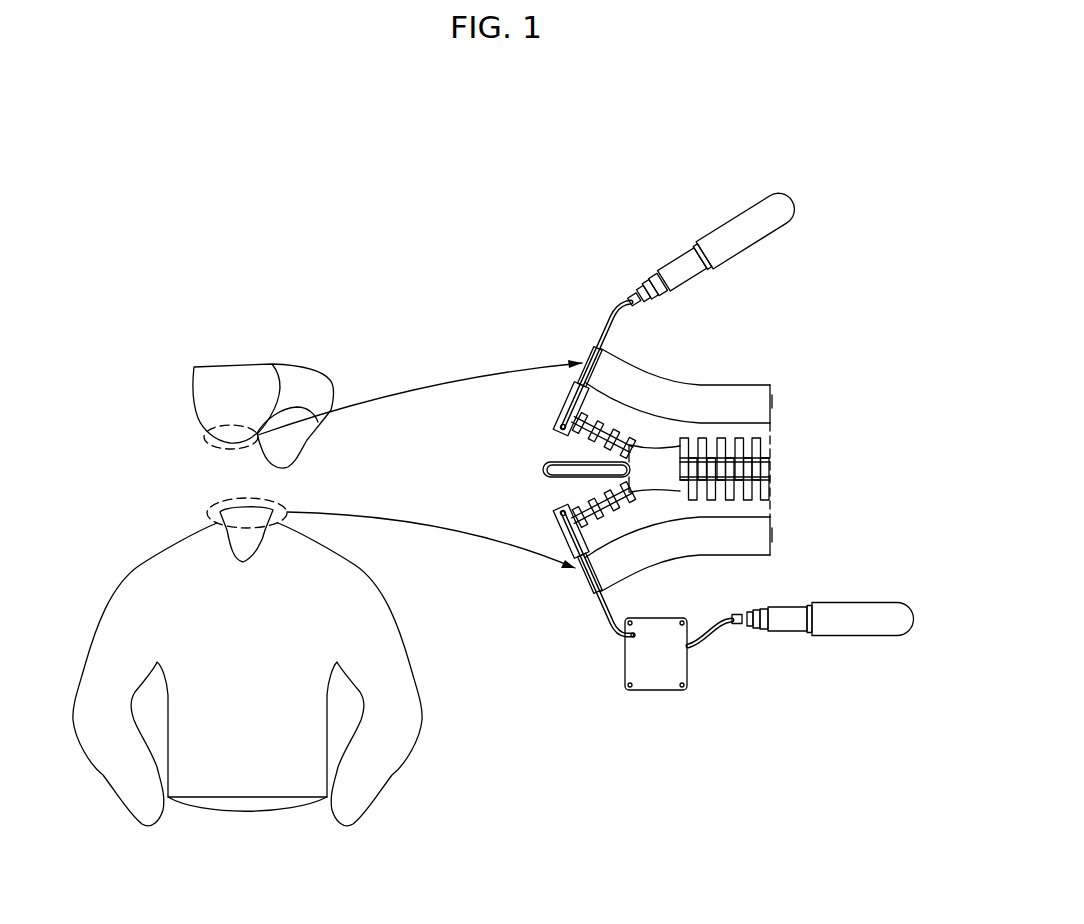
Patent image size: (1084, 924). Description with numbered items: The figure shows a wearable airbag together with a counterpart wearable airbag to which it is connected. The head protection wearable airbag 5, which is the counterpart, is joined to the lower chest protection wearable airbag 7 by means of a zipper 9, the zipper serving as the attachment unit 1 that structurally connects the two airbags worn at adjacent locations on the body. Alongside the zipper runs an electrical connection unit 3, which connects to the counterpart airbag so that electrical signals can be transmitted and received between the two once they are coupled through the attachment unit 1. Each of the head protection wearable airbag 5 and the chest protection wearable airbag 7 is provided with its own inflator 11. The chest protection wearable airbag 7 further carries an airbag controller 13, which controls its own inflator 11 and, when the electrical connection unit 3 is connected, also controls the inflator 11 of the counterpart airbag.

The attachment unit 1 is at (806, 469).
The zipper 9 is at (790, 468).
The electrical connection unit 3 is at (553, 428).
The head protection wearable airbag 5 is at (238, 370).
The chest protection wearable airbag 7 is at (147, 573).
The inflator 11 is at (730, 232).
The airbag controller 13 is at (653, 684).